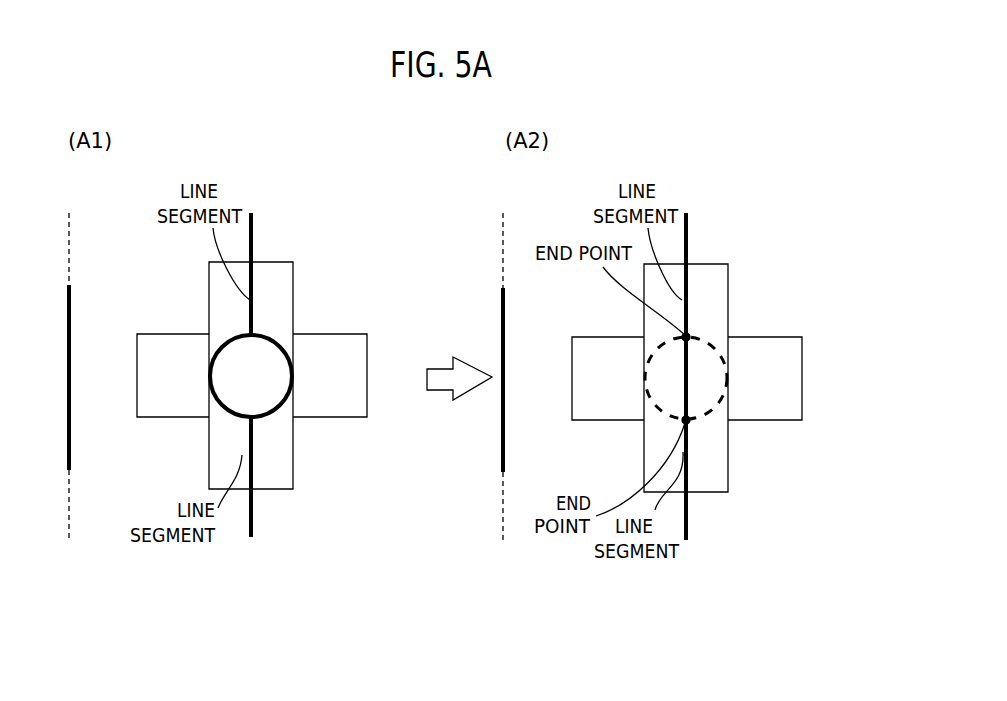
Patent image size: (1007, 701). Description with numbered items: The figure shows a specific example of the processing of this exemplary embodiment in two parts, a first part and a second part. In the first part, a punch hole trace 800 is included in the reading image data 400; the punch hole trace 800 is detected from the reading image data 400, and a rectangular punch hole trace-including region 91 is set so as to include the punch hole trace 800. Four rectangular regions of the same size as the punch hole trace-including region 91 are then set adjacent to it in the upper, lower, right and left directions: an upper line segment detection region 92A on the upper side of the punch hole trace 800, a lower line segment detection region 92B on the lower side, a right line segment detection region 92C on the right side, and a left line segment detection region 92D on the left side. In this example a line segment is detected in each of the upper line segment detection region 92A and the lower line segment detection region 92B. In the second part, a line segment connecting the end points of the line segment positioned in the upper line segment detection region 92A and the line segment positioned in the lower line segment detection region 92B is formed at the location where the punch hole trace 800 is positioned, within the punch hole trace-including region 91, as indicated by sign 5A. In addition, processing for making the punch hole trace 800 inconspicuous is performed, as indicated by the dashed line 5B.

The reading image data 400 is at (278, 236).
The punch hole trace 800 is at (284, 337).
The punch hole trace-including region 91 is at (210, 405).
The upper line segment detection region 92A is at (277, 262).
The lower line segment detection region 92B is at (280, 490).
The right line segment detection region 92C is at (338, 418).
The left line segment detection region 92D is at (168, 333).
The line segment connecting end points 5A is at (703, 382).
The dashed line 5B is at (645, 352).